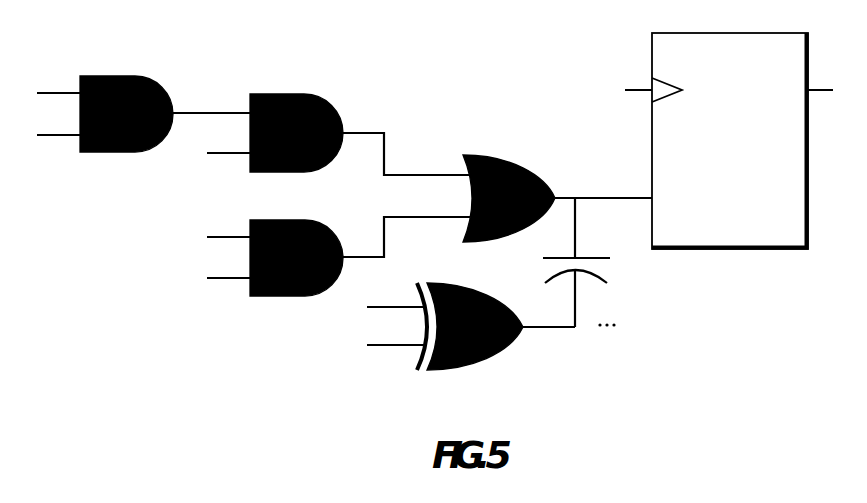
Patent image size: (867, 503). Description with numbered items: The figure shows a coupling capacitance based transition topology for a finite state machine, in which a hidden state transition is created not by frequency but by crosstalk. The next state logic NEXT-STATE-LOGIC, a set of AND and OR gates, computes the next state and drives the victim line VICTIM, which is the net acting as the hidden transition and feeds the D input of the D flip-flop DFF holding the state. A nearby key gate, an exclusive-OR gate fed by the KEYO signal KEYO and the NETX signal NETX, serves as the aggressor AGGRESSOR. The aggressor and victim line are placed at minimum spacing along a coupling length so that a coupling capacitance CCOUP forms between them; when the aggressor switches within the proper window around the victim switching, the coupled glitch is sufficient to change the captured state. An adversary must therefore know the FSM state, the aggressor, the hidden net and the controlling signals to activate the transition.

The next state logic NEXT-STATE-LOGIC is at (406, 145).
The victim line VICTIM is at (603, 168).
The coupling capacitance CCOUP is at (615, 262).
The aggressor AGGRESSOR is at (538, 331).
The KEYO signal KEYO is at (351, 321).
The NETX signal NETX is at (351, 351).
The D flip-flop DFF is at (730, 141).